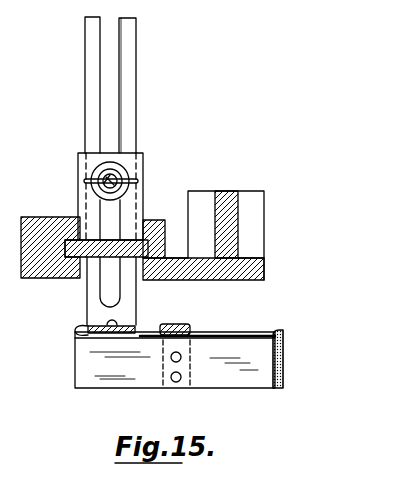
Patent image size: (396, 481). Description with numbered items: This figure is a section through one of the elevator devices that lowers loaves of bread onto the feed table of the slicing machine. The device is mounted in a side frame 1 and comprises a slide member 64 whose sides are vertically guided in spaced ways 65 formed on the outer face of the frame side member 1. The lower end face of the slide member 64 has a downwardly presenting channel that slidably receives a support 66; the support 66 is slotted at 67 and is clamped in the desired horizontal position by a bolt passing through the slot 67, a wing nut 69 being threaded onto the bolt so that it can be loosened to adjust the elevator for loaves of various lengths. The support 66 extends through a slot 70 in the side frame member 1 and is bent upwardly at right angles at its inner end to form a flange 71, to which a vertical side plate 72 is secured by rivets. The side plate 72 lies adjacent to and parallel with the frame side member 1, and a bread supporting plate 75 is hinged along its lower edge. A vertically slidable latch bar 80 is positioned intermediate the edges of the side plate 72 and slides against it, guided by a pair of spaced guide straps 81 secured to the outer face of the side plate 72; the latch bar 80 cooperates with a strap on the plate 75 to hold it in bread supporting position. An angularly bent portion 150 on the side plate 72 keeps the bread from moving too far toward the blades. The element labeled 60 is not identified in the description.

The side frame 1 is at (265, 232).
The coupling block 60 is at (128, 176).
The slide member 64 is at (66, 240).
The ways 65 is at (163, 243).
The support 66 is at (128, 104).
The slot 67 is at (112, 64).
The wing nut 69 is at (92, 182).
The slot 70 is at (73, 279).
The flange 71 is at (75, 331).
The side plate 72 is at (250, 333).
The bread supporting plate 75 is at (213, 386).
The latch bar 80 is at (188, 331).
The guide straps 81 is at (171, 325).
The angularly bent portions 150 is at (285, 370).